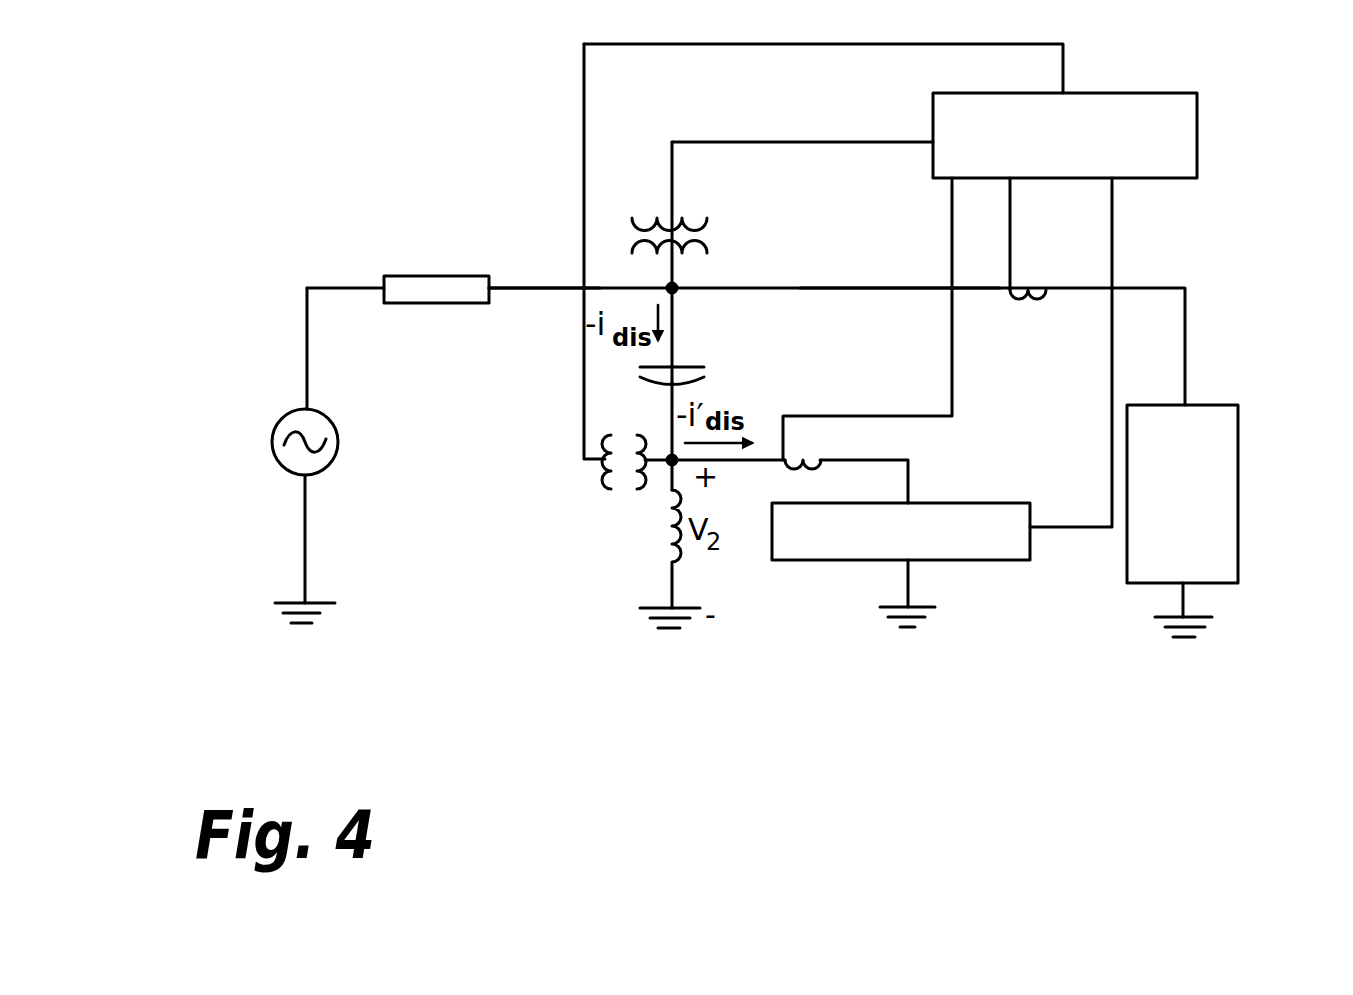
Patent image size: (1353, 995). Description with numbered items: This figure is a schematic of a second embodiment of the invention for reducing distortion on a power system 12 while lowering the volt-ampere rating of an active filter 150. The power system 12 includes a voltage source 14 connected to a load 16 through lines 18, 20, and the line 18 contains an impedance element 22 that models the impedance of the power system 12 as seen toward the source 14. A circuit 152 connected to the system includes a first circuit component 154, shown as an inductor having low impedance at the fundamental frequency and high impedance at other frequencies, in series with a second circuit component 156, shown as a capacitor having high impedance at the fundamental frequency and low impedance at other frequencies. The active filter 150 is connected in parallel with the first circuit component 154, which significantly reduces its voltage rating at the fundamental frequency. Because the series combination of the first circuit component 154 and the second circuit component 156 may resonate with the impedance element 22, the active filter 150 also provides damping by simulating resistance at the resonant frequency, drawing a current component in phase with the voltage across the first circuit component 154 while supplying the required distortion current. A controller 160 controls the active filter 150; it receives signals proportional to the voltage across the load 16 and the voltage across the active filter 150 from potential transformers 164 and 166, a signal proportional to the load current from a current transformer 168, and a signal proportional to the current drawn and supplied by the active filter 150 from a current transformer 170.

The power system 12 is at (322, 212).
The voltage source 14 is at (277, 410).
The load 16 is at (1240, 425).
The line 18 is at (527, 288).
The line 20 is at (876, 288).
The impedance element 22 is at (441, 276).
The active filter 150 is at (966, 503).
The circuit 152 is at (557, 425).
The first circuit component 154 is at (666, 560).
The second circuit component 156 is at (692, 368).
The controller 160 is at (1197, 130).
The potential transformer 164 is at (705, 226).
The potential transformer 166 is at (606, 489).
The current transformer 168 is at (1036, 300).
The current transformer 170 is at (780, 470).